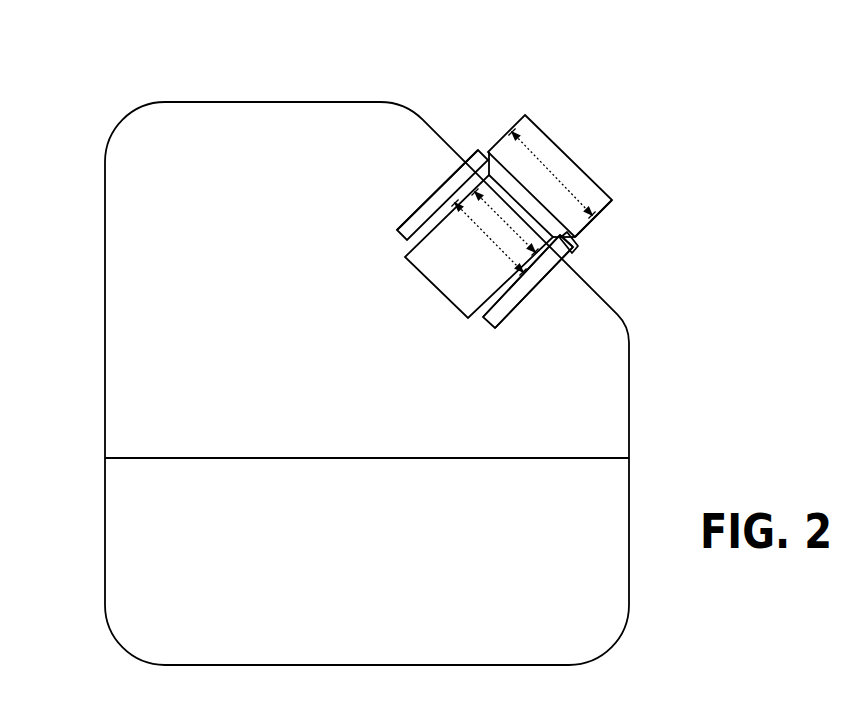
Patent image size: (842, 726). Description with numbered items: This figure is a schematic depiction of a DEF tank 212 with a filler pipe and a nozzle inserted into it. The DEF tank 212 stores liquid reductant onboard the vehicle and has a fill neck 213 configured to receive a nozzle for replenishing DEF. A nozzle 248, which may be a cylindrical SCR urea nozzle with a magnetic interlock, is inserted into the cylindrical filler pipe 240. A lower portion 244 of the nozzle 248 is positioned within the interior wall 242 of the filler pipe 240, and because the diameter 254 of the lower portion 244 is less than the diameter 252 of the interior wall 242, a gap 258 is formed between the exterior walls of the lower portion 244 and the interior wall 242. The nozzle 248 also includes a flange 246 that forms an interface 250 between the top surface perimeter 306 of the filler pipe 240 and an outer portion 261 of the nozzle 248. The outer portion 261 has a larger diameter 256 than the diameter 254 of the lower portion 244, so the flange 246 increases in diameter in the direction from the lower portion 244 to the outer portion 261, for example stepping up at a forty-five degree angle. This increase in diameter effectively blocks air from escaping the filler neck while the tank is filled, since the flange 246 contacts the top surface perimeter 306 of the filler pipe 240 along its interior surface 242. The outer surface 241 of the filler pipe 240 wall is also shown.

The DEF tank 212 is at (237, 102).
The fill neck 213 is at (533, 90).
The outer portion 261 is at (494, 124).
The diameter 256 is at (538, 161).
The diameter 254 is at (508, 220).
The nozzle 248 is at (609, 211).
The interface 250 is at (463, 163).
The outer surface 241 is at (423, 204).
The diameter 252 is at (433, 222).
The interior wall 242 is at (490, 237).
The filler pipe 240 is at (495, 320).
The lower portion 244 is at (523, 275).
The gap 258 is at (560, 259).
The flange 246 is at (575, 248).
The top surface perimeter 306 is at (578, 242).